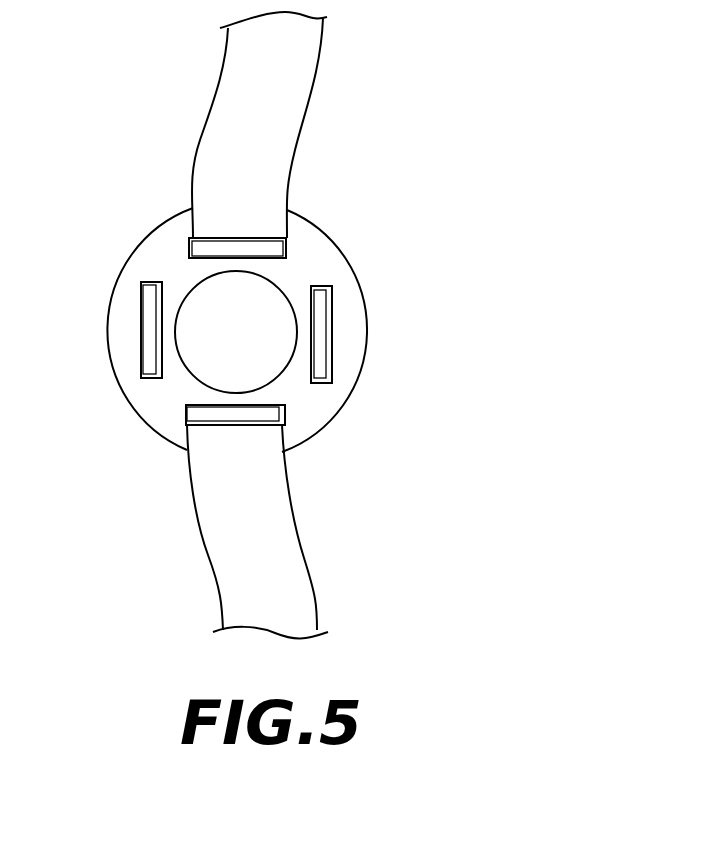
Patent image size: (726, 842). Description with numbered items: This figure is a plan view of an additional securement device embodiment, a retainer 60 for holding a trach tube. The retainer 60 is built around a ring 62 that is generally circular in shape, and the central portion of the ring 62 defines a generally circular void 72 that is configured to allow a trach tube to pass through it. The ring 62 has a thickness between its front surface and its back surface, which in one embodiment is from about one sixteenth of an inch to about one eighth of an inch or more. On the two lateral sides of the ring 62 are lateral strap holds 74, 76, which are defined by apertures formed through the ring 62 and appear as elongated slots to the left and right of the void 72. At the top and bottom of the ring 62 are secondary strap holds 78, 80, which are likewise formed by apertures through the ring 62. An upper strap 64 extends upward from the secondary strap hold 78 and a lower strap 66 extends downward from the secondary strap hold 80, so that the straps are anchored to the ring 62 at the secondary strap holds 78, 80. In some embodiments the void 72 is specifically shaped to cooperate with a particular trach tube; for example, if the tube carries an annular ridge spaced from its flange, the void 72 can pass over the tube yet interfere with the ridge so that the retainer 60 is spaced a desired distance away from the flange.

The retainer 60 is at (418, 251).
The ring 62 is at (333, 248).
The upper strap 64 is at (302, 61).
The lower strap 66 is at (253, 520).
The void 72 is at (252, 348).
The lateral strap hold 74 is at (330, 328).
The lateral strap hold 76 is at (142, 332).
The secondary strap hold 78 is at (228, 238).
The secondary strap hold 80 is at (236, 421).